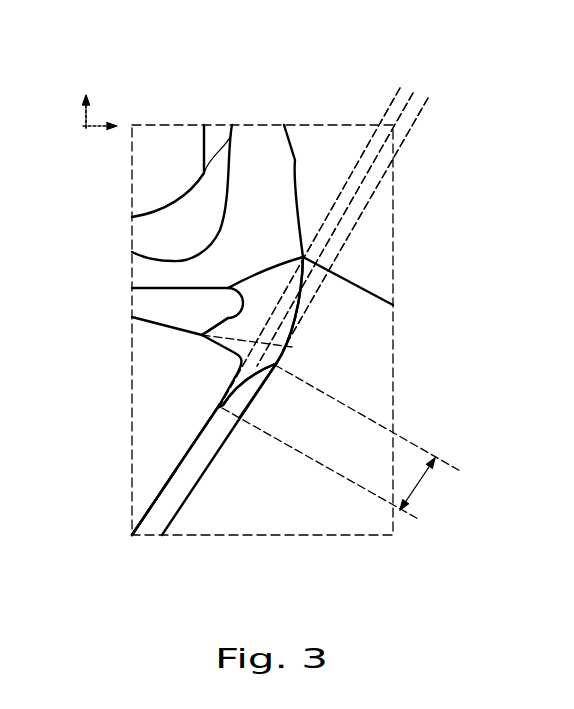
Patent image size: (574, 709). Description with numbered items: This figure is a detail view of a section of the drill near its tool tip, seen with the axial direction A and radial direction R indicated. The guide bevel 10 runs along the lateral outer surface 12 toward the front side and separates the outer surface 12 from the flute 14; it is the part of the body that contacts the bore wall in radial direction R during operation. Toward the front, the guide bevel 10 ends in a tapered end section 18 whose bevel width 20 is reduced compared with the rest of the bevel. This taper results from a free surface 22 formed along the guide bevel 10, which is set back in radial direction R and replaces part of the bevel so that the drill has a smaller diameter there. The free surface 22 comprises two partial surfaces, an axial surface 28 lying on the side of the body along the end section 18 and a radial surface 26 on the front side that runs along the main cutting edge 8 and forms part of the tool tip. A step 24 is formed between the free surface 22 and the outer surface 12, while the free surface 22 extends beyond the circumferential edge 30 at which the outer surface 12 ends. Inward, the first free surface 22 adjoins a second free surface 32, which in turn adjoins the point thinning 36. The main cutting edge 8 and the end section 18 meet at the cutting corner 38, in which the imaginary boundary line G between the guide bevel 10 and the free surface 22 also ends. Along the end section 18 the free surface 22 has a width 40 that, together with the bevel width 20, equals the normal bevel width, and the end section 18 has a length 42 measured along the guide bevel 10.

The main cutting edge 8 is at (293, 148).
The guide bevel 10 is at (153, 510).
The lateral outer surface 12 is at (153, 433).
The flute 14 is at (380, 397).
The end section 18 is at (255, 380).
The bevel width 20 is at (392, 136).
The free surface 22 is at (211, 258).
The step 24 is at (154, 477).
The radial surface 26 is at (243, 320).
The axial surface 28 is at (235, 348).
The circumferential edge 30 is at (145, 323).
The second free surface 32 is at (240, 133).
The point thinning 36 is at (147, 230).
The cutting corner 38 is at (275, 366).
The width 40 is at (396, 115).
The length 42 is at (420, 485).
The axial direction A is at (83, 117).
The radial direction R is at (93, 123).
The boundary line G is at (280, 362).